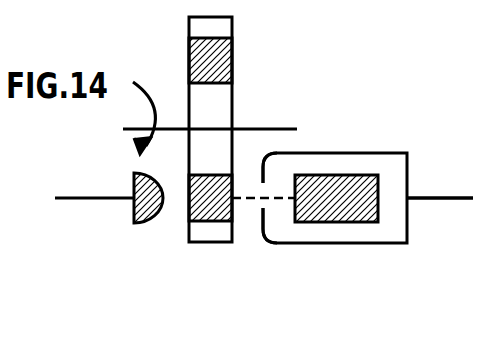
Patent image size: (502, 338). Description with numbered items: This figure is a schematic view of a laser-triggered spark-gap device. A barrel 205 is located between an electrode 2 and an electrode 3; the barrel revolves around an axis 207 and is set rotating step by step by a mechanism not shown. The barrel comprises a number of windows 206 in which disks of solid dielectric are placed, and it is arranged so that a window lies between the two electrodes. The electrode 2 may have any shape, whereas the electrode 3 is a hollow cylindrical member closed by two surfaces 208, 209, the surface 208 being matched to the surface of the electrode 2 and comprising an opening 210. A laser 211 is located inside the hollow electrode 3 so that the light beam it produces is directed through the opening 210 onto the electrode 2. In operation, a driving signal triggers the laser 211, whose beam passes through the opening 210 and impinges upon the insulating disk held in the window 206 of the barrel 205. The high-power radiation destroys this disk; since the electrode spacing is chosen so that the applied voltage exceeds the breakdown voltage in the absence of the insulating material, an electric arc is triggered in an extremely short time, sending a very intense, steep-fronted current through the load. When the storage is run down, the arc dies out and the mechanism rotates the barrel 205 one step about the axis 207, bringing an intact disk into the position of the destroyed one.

The electrode 2 is at (137, 225).
The electrode 3 is at (328, 243).
The barrel 205 is at (202, 25).
The windows 206 is at (190, 65).
The axis 207 is at (267, 128).
The surface 208 is at (265, 207).
The surface 209 is at (408, 222).
The opening 210 is at (265, 191).
The laser 211 is at (343, 208).